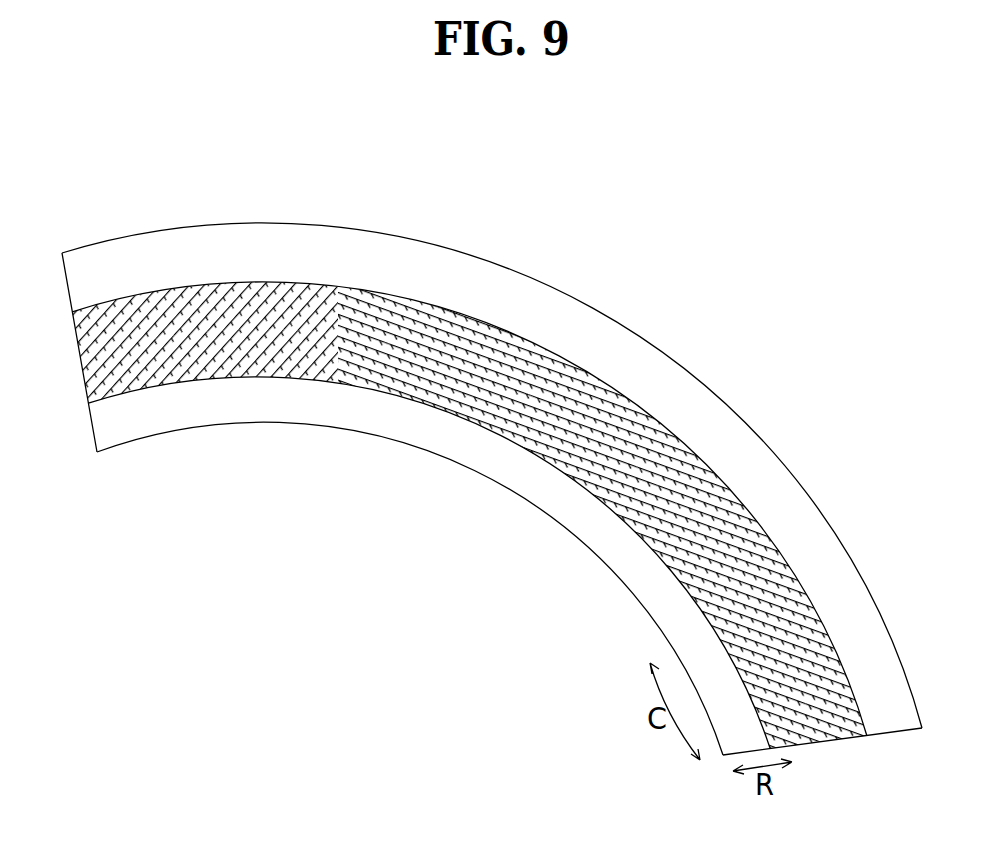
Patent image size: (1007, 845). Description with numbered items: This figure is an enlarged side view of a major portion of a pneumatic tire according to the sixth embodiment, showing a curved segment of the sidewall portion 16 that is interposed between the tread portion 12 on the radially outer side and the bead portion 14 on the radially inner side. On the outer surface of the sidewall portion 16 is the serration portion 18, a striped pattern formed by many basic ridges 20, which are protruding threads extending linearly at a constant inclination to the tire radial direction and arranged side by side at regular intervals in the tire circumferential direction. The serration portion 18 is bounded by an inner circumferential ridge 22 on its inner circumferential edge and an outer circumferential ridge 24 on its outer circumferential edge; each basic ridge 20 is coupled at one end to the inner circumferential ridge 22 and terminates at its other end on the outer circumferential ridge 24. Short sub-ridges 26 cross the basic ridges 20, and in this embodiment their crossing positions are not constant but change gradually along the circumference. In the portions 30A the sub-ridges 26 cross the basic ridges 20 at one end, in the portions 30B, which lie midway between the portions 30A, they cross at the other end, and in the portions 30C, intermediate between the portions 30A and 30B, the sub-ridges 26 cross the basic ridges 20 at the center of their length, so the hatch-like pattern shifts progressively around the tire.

The tread portion 12 is at (291, 224).
The bead portion 14 is at (325, 428).
The sidewall portion 16 is at (365, 290).
The serration portion 18 is at (822, 759).
The basic ridge 20 is at (483, 326).
The inner circumferential ridge 22 is at (545, 459).
The outer circumferential ridge 24 is at (585, 358).
The sub-ridge 26 is at (516, 354).
The portion 30A is at (163, 268).
The portion 30B is at (644, 390).
The portion 30C is at (410, 280).